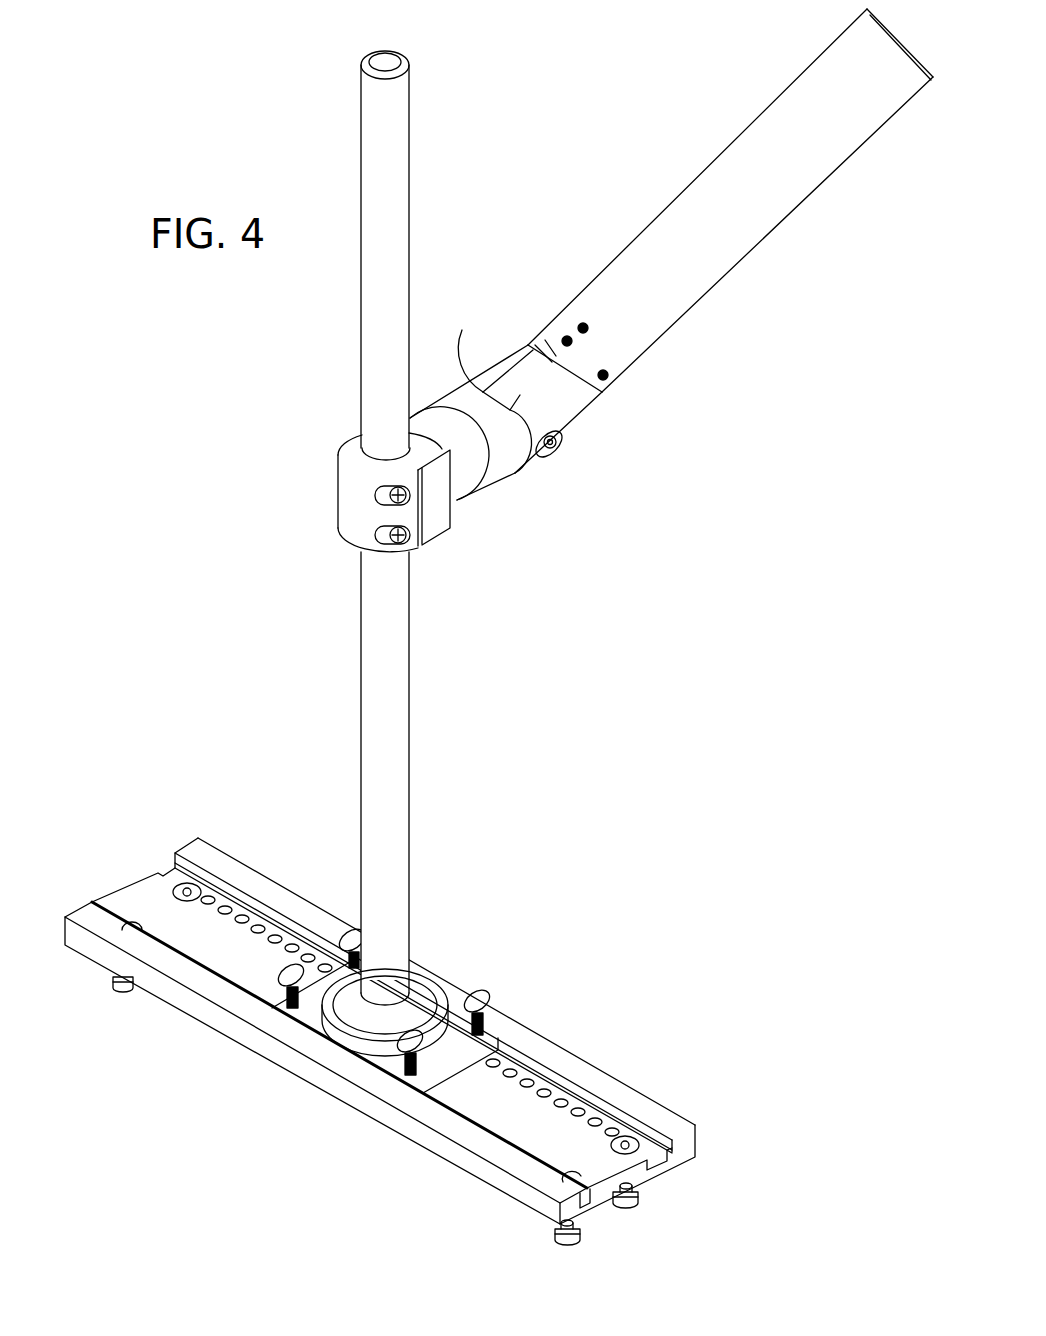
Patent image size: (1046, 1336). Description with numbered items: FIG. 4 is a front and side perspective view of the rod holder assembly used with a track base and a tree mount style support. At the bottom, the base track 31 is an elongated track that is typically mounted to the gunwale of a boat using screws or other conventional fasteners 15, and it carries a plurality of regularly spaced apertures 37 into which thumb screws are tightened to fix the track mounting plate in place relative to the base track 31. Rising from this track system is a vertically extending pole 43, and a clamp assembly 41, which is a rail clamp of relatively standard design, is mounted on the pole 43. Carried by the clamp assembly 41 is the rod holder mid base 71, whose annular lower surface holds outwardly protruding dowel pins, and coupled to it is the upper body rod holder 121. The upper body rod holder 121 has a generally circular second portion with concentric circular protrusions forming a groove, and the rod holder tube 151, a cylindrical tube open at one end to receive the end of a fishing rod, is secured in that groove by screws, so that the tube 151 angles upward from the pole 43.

The fasteners 15 is at (632, 1207).
The base track 31 is at (105, 924).
The regularly spaced apertures 37 is at (529, 1082).
The clamp assembly 41 is at (395, 556).
The vertically extending pole 43 is at (412, 784).
The rod holder mid base 71 is at (488, 394).
The upper body rod holder 121 is at (575, 420).
The rod holder tube 151 is at (714, 292).